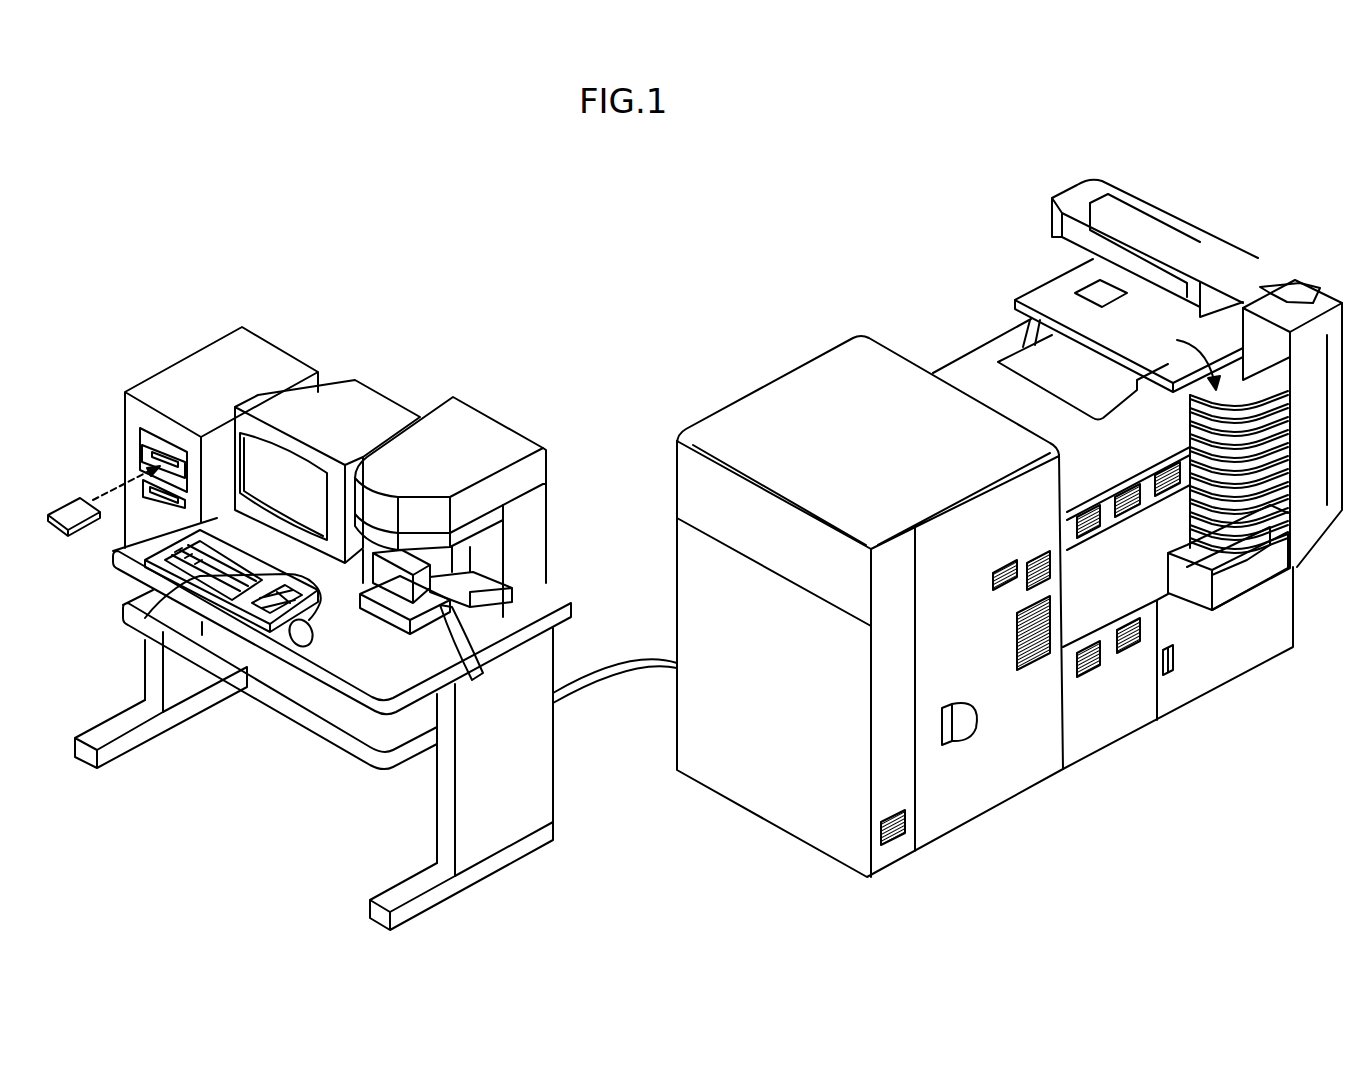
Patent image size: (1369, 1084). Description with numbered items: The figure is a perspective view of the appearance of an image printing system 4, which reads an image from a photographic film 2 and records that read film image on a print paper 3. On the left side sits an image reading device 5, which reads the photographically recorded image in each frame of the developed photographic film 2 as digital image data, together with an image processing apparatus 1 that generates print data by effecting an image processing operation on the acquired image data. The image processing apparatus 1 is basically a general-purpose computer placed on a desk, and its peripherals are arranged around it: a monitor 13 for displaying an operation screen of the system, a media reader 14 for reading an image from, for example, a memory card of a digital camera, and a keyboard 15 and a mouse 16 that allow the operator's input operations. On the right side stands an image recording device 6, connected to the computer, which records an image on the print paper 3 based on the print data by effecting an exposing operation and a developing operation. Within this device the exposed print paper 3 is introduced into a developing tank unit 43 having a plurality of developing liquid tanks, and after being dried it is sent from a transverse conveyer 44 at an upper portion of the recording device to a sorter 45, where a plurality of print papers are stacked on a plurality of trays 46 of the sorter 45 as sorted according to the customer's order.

The image processing apparatus 1 is at (188, 373).
The photographic film 2 is at (482, 673).
The print paper 3 is at (1104, 292).
The image printing system 4 is at (590, 300).
The image reading device 5 is at (473, 433).
The image recording device 6 is at (802, 324).
The monitor 13 is at (352, 397).
The media reader 14 is at (140, 450).
The keyboard 15 is at (145, 618).
The mouse 16 is at (304, 648).
The developing tank unit 43 is at (1129, 703).
The transverse conveyer 44 is at (1057, 287).
The sorter 45 is at (1299, 278).
The trays 46 is at (1182, 427).